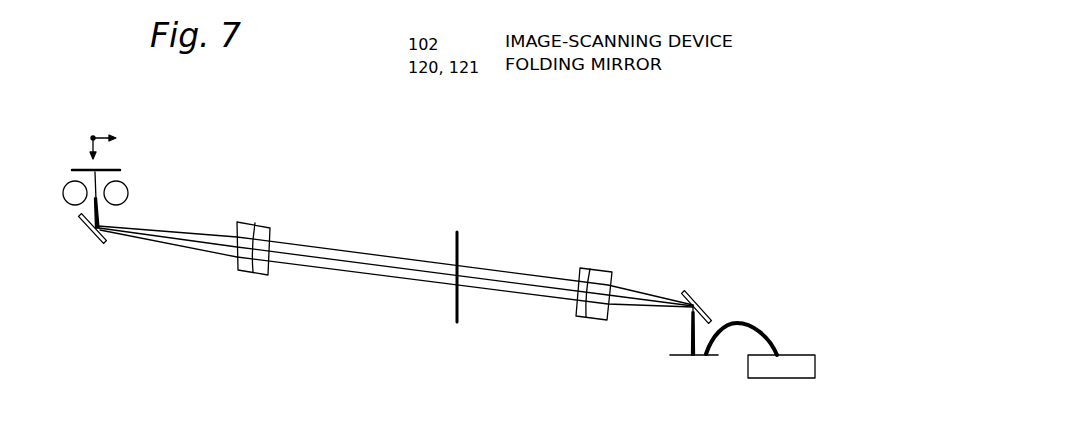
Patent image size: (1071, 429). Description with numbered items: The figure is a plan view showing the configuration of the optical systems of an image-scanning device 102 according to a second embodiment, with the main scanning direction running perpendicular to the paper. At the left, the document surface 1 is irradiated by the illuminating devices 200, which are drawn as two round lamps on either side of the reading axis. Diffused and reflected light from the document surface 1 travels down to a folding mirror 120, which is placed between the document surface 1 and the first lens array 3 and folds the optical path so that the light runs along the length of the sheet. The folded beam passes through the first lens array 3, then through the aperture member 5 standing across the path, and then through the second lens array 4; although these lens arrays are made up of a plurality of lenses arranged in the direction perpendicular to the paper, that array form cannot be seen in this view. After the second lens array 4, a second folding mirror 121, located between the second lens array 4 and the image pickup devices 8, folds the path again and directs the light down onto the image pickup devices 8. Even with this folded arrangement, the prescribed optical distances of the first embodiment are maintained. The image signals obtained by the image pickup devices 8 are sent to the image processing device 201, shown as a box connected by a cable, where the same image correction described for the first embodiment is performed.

The image-scanning device 102 is at (404, 184).
The document surface 1 is at (113, 170).
The illuminating devices 200 is at (128, 188).
The folding mirror 120 is at (98, 243).
The first lens array 3 is at (257, 224).
The aperture member 5 is at (459, 237).
The second lens array 4 is at (600, 268).
The folding mirror 121 is at (697, 300).
The image pickup devices 8 is at (708, 357).
The image processing device 201 is at (797, 355).